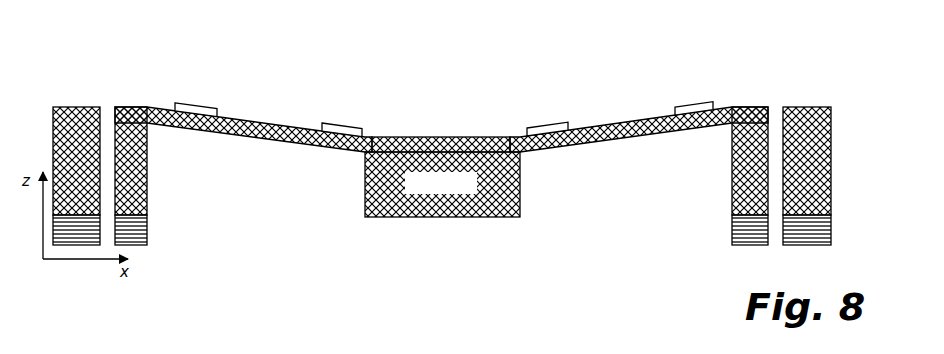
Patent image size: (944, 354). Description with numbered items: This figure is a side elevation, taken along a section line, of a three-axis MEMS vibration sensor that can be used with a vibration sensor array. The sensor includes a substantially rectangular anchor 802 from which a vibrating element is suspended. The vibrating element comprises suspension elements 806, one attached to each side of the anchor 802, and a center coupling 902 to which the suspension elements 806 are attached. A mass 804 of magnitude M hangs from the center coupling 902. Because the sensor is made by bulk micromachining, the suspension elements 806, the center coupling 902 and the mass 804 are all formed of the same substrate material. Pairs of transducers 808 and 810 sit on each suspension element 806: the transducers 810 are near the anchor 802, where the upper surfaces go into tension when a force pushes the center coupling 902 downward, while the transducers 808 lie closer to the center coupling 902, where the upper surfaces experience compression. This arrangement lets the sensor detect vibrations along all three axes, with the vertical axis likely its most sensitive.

The anchor 802 is at (147, 196).
The suspension element 806 is at (290, 143).
The transducer 808 is at (332, 122).
The transducer 810 is at (191, 105).
The center coupling 902 is at (405, 138).
The mass 804 is at (442, 184).